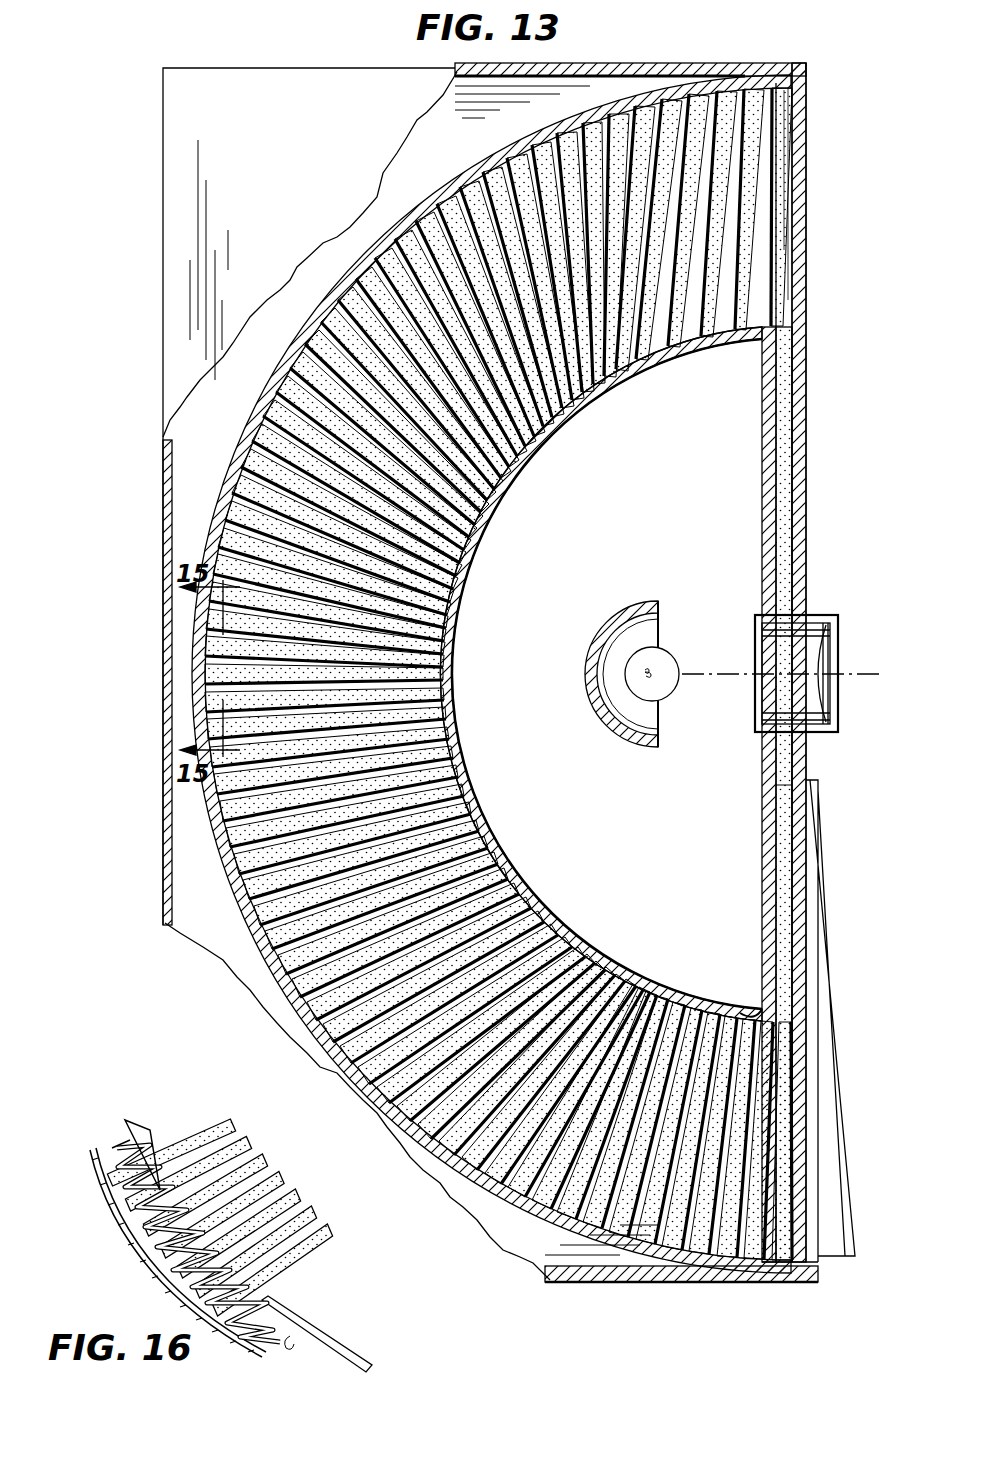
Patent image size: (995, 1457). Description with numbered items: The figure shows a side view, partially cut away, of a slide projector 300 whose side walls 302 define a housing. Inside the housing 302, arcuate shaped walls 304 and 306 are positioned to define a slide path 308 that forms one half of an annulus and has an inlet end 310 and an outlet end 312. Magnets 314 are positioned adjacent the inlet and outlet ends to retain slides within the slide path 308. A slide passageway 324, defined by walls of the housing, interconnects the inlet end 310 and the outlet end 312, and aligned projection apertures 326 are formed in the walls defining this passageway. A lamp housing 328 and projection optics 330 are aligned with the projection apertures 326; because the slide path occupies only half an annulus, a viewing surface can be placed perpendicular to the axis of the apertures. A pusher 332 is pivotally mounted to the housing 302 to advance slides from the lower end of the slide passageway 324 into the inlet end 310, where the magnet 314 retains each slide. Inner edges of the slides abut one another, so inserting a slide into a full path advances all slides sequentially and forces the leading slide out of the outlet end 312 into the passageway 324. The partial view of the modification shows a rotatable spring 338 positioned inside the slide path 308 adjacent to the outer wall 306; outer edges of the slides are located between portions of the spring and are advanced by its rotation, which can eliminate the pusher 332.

In FIG. 13, the slide projector 300 is at (262, 66).
In FIG. 13, the side walls (housing) 302 is at (299, 186).
In FIG. 13, the arcuate shaped wall (inner wall) 304 is at (473, 556).
In FIG. 13, the arcuate shaped wall (outer wall) 306 is at (285, 362).
In FIG. 16, the arcuate shaped wall (outer wall) 306 is at (95, 1170).
In FIG. 13, the slide path 308 is at (472, 802).
In FIG. 13, the inlet end 310 is at (765, 1005).
In FIG. 13, the outlet end 312 is at (748, 345).
In FIG. 13, the magnets 314 is at (756, 345).
In FIG. 13, the slide passageway 324 is at (788, 470).
In FIG. 13, the projection apertures 326 is at (810, 617).
In FIG. 13, the lamp housing 328 is at (640, 625).
In FIG. 13, the projection optics 330 is at (829, 692).
In FIG. 13, the pusher 332 is at (846, 1118).
In FIG. 16, the rotatable spring 338 is at (113, 1145).